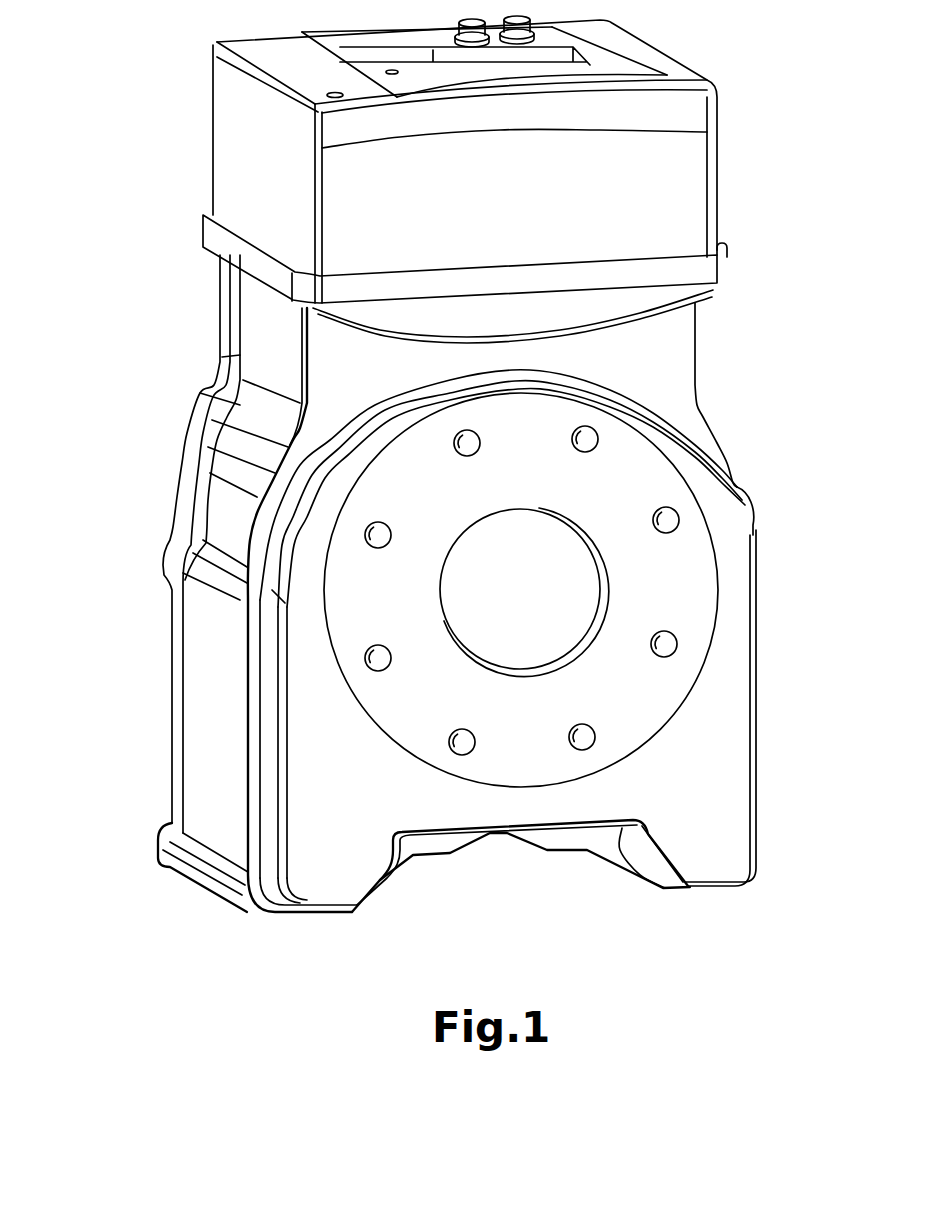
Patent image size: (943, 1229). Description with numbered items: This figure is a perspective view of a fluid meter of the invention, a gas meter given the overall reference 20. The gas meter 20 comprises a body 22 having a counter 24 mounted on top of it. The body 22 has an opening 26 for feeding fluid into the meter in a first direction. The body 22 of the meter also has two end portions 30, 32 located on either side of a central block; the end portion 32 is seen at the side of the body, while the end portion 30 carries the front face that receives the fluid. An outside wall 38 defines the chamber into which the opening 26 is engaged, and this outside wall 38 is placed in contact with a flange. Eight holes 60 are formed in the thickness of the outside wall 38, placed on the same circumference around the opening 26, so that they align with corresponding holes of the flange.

The gas meter 20 is at (447, 466).
The body 22 is at (210, 703).
The counter 24 is at (663, 192).
The opening 26 is at (556, 606).
The end portion 30 is at (706, 783).
The end portion 32 is at (183, 465).
The outside wall 38 is at (325, 797).
The holes 60 is at (467, 443).